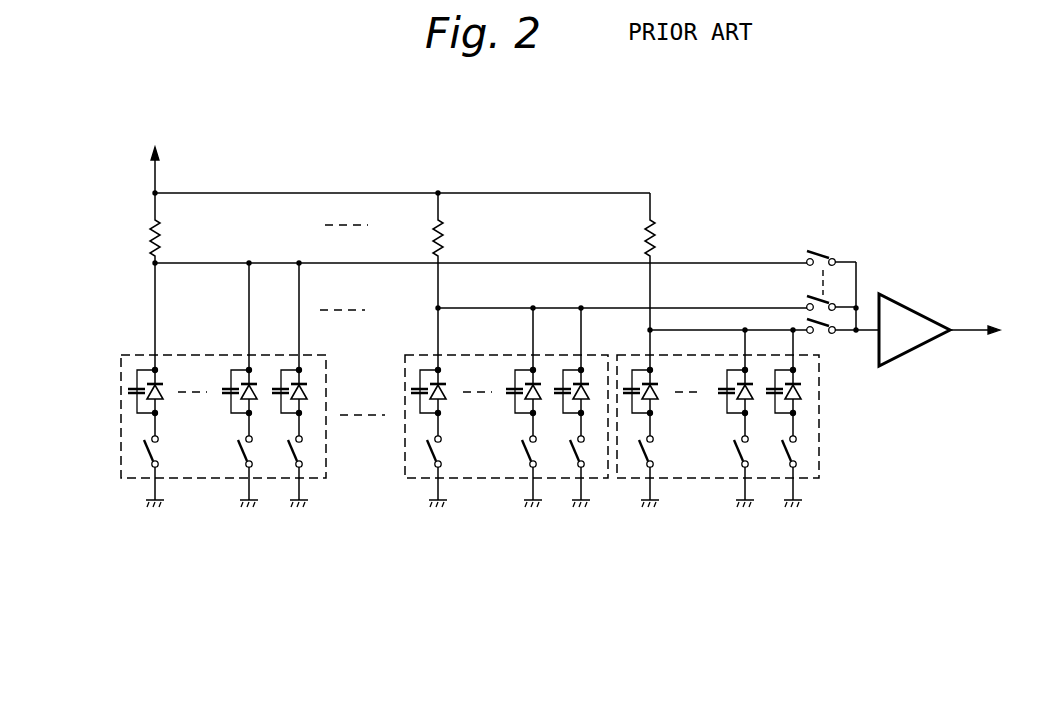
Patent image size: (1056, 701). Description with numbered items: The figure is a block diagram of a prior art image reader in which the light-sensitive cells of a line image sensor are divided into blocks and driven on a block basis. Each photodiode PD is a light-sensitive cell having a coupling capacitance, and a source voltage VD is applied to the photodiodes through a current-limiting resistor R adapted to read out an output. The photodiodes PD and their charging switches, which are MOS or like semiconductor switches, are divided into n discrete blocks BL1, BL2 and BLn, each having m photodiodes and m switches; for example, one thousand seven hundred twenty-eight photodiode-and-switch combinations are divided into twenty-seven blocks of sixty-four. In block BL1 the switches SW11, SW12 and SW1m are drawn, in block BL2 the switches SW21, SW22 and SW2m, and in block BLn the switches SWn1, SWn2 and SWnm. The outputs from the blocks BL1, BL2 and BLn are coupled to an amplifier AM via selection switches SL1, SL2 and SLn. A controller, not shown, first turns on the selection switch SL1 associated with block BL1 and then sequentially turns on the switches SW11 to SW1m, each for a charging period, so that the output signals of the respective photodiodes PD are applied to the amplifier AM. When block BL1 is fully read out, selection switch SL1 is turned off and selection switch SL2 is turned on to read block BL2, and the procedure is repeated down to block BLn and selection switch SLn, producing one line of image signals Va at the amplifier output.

The source voltage VD is at (160, 142).
The resistor R is at (161, 233).
The photodiode PD is at (159, 393).
The switch SWnm is at (147, 464).
The switch SWn2 is at (240, 458).
The switch SWn1 is at (291, 464).
The switch SW2m is at (430, 464).
The switch SW22 is at (524, 458).
The switch SW21 is at (573, 464).
The switch SW1m is at (642, 464).
The switch SW12 is at (736, 458).
The switch SW11 is at (785, 464).
The block BLn is at (206, 479).
The block BL2 is at (489, 479).
The block BL1 is at (700, 479).
The selection switch SLn is at (818, 252).
The selection switch SL2 is at (806, 299).
The selection switch SL1 is at (820, 335).
The amplifier AM is at (912, 312).
The image signals Va is at (989, 331).